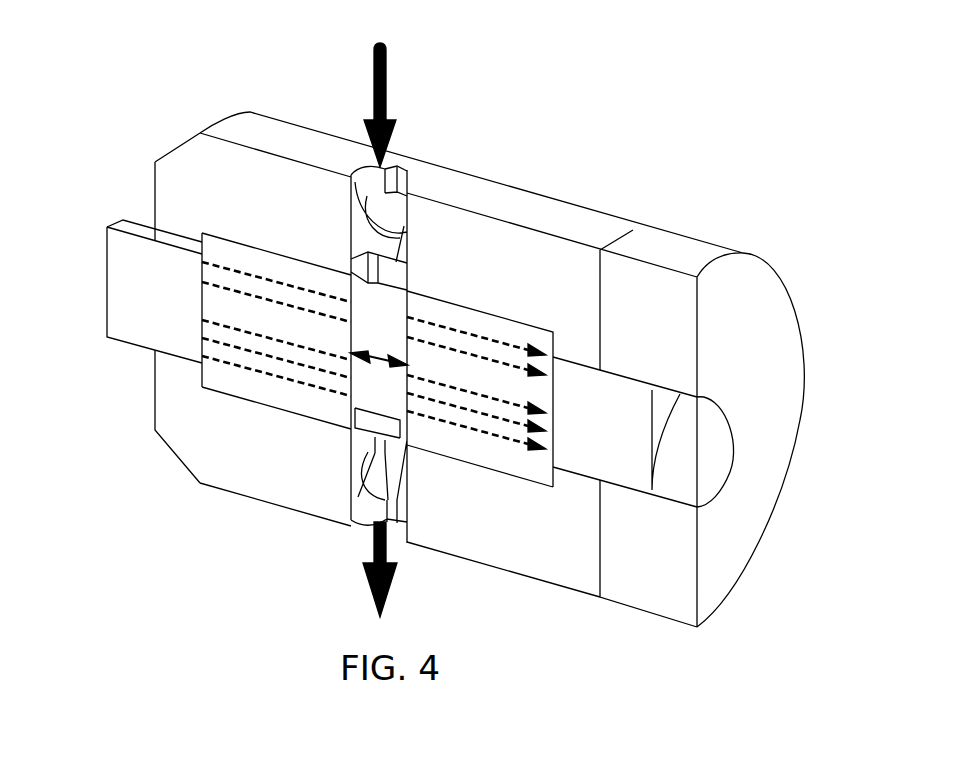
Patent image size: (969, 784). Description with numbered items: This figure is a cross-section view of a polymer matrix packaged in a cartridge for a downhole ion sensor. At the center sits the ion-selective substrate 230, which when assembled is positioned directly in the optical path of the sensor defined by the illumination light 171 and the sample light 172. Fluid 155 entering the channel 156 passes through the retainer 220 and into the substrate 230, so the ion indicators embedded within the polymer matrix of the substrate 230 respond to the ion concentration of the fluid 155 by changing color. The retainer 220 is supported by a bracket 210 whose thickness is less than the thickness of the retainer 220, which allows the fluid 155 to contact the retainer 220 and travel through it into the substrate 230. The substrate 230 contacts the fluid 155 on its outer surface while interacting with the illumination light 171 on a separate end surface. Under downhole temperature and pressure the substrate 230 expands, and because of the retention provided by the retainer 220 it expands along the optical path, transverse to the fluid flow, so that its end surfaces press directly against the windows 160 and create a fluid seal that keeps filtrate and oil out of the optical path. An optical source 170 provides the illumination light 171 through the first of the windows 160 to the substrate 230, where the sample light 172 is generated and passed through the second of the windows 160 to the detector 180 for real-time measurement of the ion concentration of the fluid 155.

The fluid 155 is at (375, 88).
The channel 156 is at (407, 185).
The windows 160 is at (240, 267).
The optical source 170 is at (133, 270).
The illumination light 171 is at (235, 367).
The sample light 172 is at (235, 367).
The detector 180 is at (617, 410).
The bracket 210 is at (398, 268).
The retainer 220 is at (367, 283).
The ion-selective substrate 230 is at (370, 375).